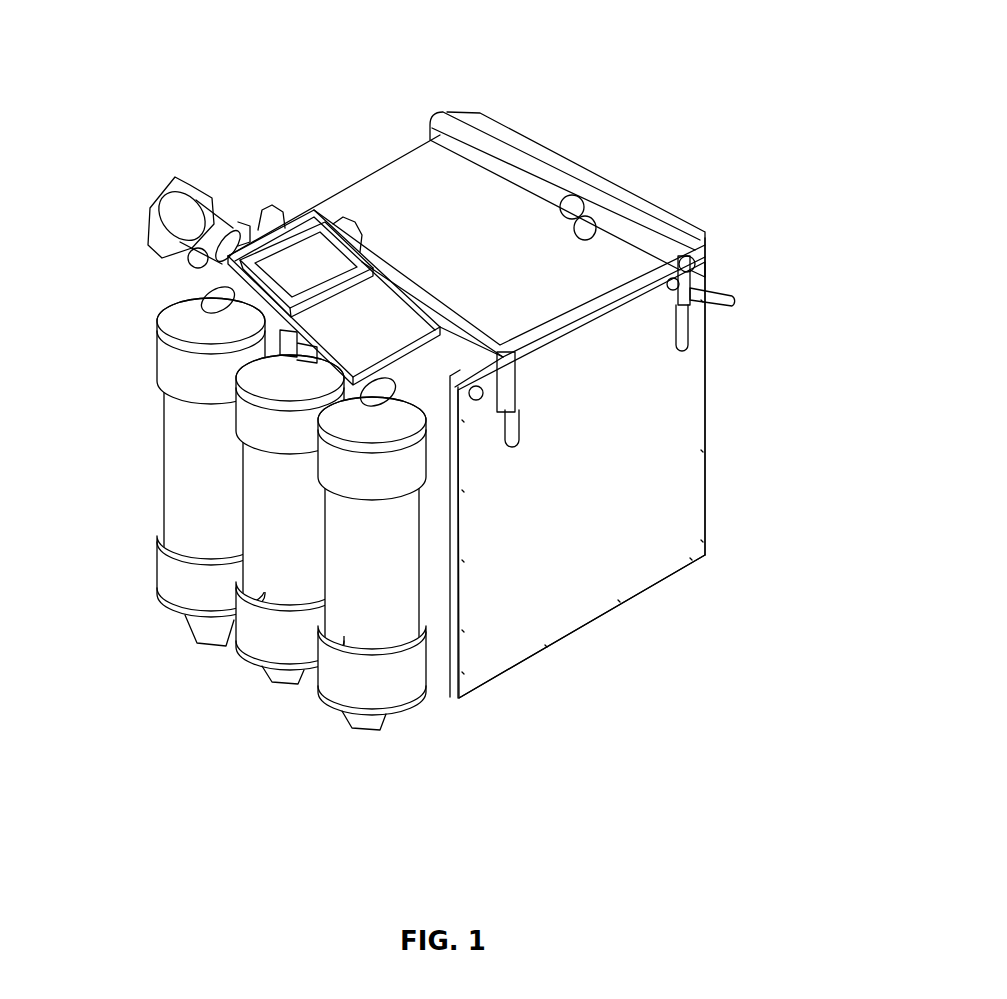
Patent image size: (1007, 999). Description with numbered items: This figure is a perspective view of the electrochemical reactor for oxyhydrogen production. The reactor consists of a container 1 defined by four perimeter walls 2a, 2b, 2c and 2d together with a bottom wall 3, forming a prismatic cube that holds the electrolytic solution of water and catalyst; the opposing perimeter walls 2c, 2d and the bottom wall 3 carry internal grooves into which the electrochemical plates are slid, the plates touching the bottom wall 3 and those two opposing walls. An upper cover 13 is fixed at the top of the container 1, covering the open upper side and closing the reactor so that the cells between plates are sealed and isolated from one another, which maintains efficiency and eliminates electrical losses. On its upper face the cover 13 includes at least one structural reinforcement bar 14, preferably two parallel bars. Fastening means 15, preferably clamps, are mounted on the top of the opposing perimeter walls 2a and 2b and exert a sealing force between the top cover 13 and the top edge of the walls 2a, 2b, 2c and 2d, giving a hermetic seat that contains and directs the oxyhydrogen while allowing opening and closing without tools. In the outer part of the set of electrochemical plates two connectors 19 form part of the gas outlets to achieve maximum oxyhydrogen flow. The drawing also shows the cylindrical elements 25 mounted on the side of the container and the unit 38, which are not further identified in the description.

The container 1 is at (448, 419).
The perimeter wall 2a is at (590, 498).
The perimeter wall 2b is at (466, 201).
The perimeter wall 2c is at (437, 592).
The perimeter wall 2d is at (707, 418).
The bottom wall 3 is at (573, 634).
The upper cover 13 is at (476, 262).
The structural reinforcement bar 14 is at (375, 265).
The fastening means 15 is at (515, 400).
The connectors 19 is at (568, 160).
The filter cartridges 25 is at (200, 458).
The display / valve assembly 38 is at (300, 262).